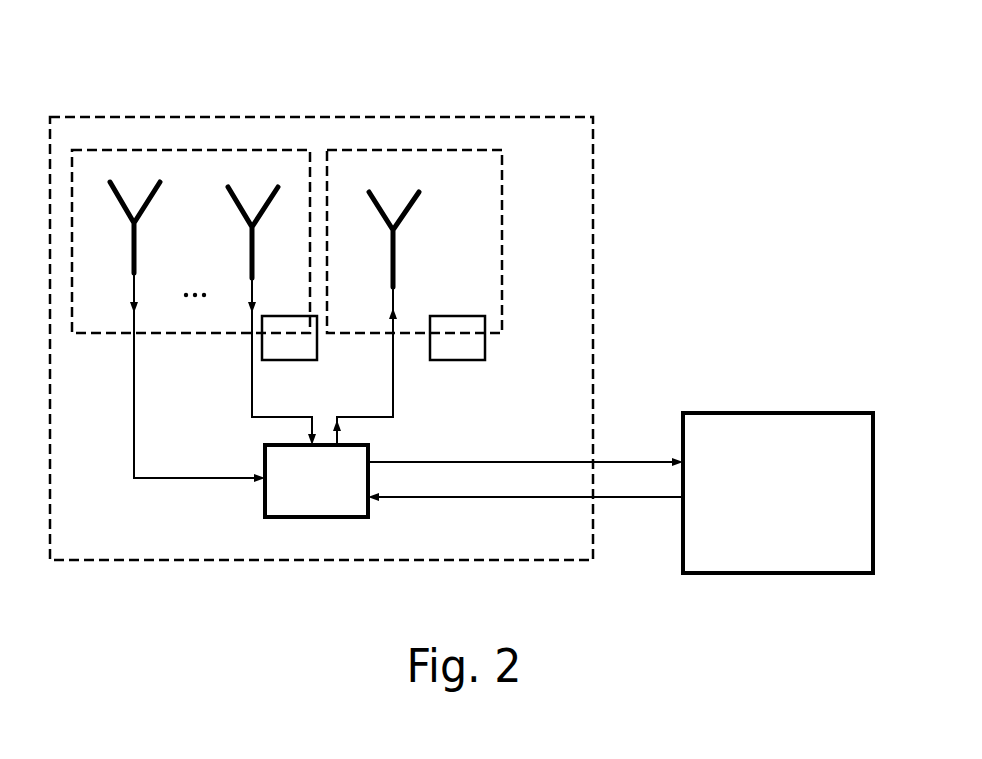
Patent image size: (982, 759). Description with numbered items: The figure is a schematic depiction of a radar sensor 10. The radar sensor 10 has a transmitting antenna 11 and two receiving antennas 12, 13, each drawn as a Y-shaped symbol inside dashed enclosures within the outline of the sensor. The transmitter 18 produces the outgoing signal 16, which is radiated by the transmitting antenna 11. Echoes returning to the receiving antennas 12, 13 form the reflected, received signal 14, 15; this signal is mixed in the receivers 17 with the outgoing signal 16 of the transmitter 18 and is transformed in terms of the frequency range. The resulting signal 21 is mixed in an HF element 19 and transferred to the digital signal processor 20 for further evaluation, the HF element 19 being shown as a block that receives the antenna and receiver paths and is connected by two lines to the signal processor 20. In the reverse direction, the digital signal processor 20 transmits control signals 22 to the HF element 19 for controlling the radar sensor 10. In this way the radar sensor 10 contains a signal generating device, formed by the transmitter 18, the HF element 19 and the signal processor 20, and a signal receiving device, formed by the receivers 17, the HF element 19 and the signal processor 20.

The radar sensor 10 is at (630, 98).
The transmitting antenna 11 is at (395, 255).
The receiving antenna 12 is at (136, 255).
The receiving antenna 13 is at (254, 255).
The reflected, received signal 14 is at (133, 292).
The reflected, received signal 15 is at (251, 292).
The outgoing signal 16 is at (392, 285).
The receiver 17 is at (290, 360).
The transmitter 18 is at (478, 360).
The HF element 19 is at (352, 517).
The digital signal processor 20 is at (762, 507).
The signal 21 is at (505, 460).
The control signals 22 is at (505, 499).